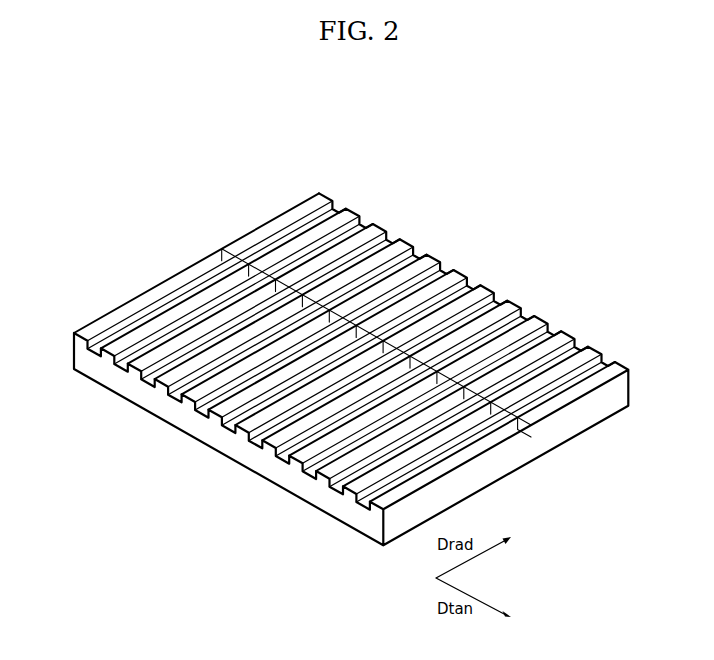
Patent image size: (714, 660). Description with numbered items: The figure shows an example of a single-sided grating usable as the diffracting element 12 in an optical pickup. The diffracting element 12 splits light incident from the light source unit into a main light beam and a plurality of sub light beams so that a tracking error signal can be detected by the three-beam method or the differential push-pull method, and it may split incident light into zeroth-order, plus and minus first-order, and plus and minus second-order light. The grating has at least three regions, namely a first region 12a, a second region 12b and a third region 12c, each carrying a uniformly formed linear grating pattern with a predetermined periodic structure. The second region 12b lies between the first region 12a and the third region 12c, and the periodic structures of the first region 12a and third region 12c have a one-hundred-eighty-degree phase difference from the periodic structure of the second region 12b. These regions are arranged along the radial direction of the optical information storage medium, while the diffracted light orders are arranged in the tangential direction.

The diffracting element 12 is at (351, 355).
The first region 12a is at (250, 241).
The second region 12b is at (213, 280).
The third region 12c is at (170, 288).